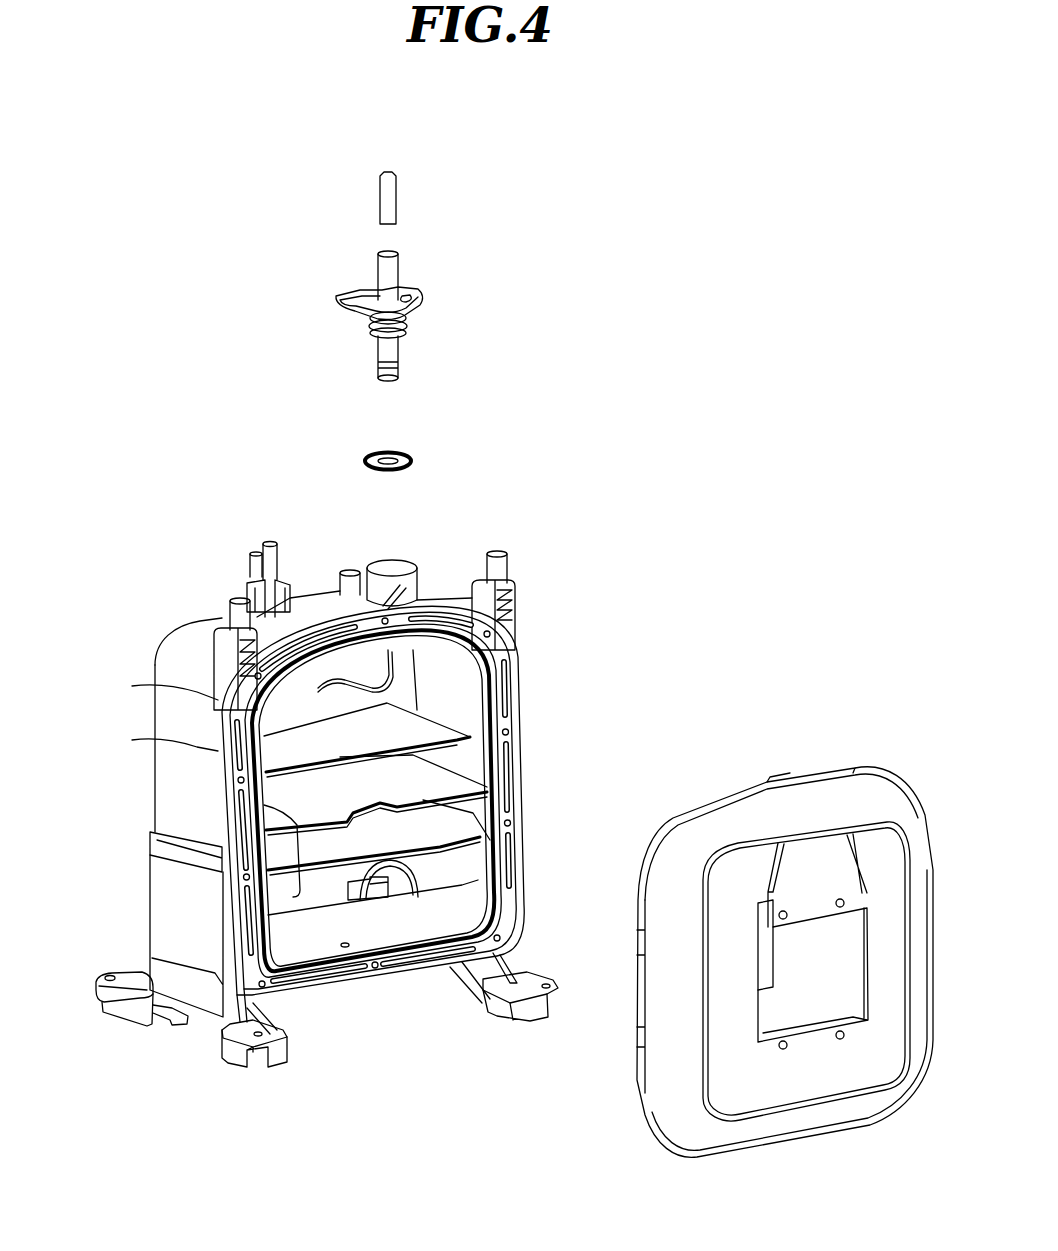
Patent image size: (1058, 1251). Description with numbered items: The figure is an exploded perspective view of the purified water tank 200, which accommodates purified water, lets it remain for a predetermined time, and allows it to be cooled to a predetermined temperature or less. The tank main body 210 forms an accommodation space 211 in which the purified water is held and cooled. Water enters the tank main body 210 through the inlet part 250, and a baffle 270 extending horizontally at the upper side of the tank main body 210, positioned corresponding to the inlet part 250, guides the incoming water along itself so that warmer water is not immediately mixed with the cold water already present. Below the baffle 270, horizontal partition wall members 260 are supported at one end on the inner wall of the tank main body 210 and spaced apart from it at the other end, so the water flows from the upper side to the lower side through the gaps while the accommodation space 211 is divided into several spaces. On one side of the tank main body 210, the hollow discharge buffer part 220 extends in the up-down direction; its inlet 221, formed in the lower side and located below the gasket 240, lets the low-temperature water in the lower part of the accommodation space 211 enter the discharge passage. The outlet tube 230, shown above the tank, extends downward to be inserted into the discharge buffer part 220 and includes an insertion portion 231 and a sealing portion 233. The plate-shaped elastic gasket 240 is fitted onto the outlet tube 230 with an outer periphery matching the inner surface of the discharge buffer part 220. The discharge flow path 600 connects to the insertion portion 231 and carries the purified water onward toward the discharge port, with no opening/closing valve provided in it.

The discharge flow path 600 is at (397, 188).
The outlet tube 230 is at (458, 295).
The sealing portion 233 is at (418, 292).
The insertion portion 231 is at (387, 349).
The gasket 240 is at (412, 461).
The purified water tank 200 is at (302, 782).
The inlet part 250 is at (270, 543).
The baffle 270 is at (275, 712).
The partition wall member 260 is at (293, 753).
The accommodation space 211 is at (290, 815).
The tank main body 210 is at (178, 884).
The discharge buffer part 220 is at (403, 867).
The inlet 221 is at (373, 888).